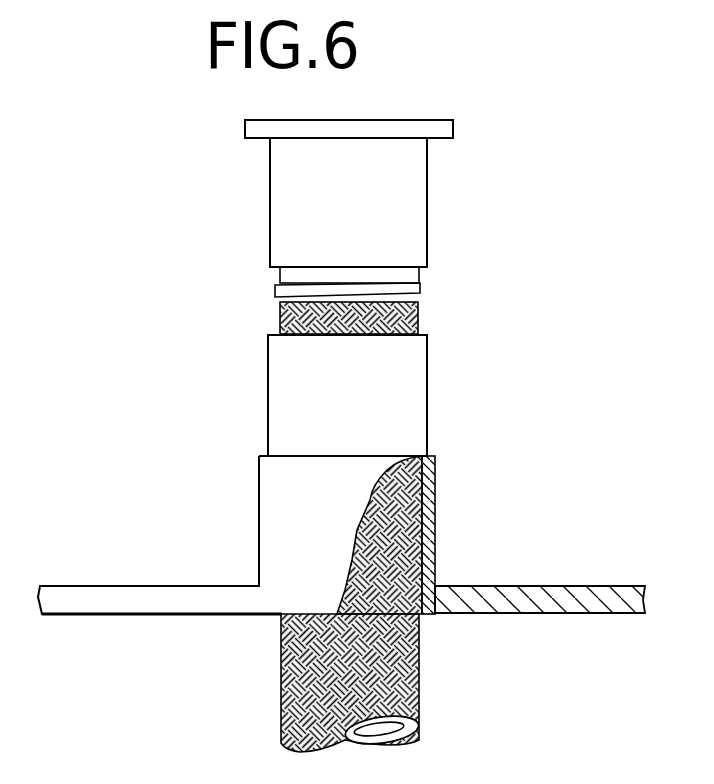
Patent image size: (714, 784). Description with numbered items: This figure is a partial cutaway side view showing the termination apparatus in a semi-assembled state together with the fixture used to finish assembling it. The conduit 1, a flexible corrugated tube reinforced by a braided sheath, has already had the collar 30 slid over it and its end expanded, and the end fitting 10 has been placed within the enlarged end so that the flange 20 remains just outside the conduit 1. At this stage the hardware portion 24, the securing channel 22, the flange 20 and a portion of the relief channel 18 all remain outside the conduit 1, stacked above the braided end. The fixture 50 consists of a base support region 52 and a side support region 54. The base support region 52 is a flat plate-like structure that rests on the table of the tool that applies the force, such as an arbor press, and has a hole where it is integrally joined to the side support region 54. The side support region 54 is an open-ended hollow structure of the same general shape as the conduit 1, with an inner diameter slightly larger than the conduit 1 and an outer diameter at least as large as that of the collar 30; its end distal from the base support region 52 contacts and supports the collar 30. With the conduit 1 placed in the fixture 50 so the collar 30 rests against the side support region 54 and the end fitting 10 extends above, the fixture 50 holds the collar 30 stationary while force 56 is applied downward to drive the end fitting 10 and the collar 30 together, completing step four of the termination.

The conduit 1 is at (380, 320).
The end fitting 10 is at (350, 289).
The relief channel 18 is at (417, 300).
The flange 20 is at (422, 290).
The securing channel 22 is at (421, 277).
The hardware portion 24 is at (428, 190).
The collar 30 is at (337, 392).
The fixture 50 is at (330, 519).
The base support region 52 is at (519, 597).
The side support region 54 is at (429, 530).
The force 56 is at (353, 118).